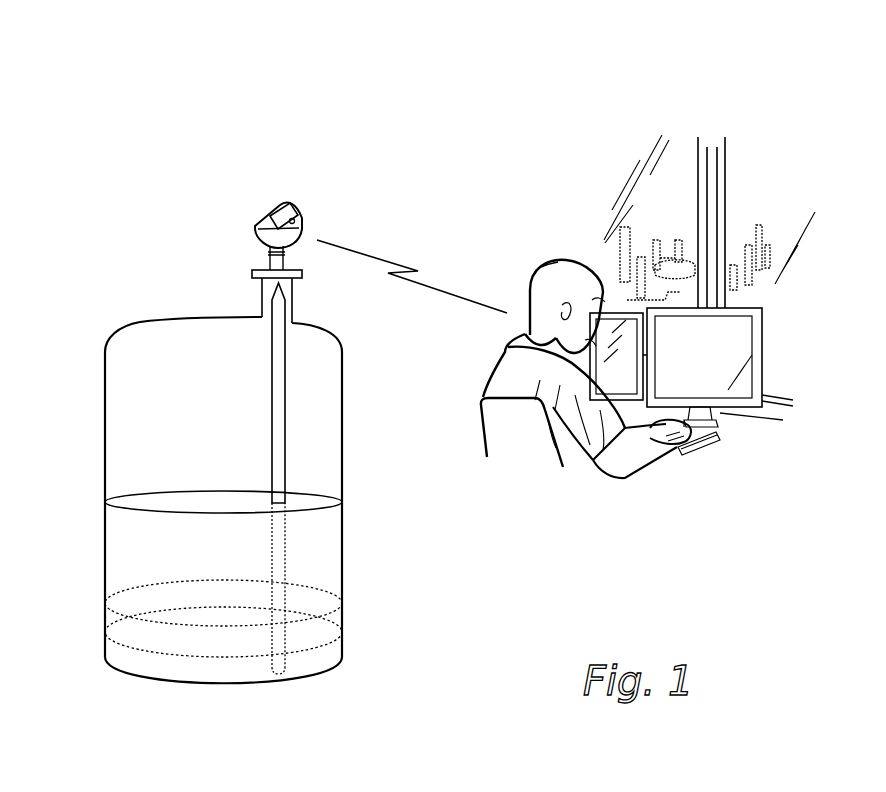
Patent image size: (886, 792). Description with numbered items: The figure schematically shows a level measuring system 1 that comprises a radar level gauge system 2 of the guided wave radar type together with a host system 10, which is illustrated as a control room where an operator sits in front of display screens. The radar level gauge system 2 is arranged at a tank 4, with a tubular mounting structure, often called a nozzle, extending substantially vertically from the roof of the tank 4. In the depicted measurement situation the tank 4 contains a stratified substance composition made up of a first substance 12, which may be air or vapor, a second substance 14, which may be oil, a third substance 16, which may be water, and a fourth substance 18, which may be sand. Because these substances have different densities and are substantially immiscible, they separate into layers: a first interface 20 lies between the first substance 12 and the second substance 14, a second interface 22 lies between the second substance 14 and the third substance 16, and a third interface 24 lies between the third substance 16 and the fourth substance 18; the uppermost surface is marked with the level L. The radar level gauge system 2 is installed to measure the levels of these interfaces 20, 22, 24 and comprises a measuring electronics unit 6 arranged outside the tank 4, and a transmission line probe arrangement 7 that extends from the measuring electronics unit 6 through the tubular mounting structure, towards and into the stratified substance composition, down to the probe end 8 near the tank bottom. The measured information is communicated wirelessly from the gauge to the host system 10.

The level measuring system 1 is at (499, 80).
The radar level gauge system 2 is at (228, 203).
The tank 4 is at (105, 445).
The measuring electronics unit 6 is at (274, 208).
The transmission line probe arrangement 7 is at (279, 407).
The probe end 8 is at (281, 664).
The host system 10 is at (757, 189).
The first substance 12 is at (193, 386).
The second substance 14 is at (246, 561).
The third substance 16 is at (216, 656).
The fourth substance 18 is at (234, 686).
The first interface 20 is at (188, 503).
The second interface 22 is at (135, 598).
The third interface 24 is at (135, 643).
The level L is at (105, 502).